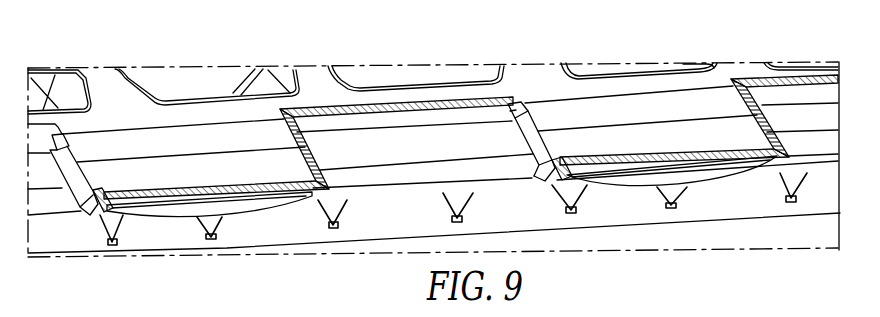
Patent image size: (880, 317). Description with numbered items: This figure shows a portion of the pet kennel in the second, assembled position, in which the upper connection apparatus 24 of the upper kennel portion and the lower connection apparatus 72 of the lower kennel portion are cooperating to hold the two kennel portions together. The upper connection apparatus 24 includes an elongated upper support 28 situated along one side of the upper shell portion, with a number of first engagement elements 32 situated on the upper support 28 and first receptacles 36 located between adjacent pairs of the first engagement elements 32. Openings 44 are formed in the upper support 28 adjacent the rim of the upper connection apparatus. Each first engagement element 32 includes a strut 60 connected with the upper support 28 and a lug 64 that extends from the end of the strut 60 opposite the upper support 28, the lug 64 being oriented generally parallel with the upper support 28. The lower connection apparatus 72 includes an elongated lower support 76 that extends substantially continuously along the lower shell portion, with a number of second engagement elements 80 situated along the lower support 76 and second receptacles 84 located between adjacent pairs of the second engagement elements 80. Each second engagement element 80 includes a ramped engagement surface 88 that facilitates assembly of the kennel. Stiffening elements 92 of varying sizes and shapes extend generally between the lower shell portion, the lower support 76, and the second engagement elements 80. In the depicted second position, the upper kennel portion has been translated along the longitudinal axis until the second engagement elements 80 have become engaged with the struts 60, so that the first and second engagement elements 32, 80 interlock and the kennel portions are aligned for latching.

The upper connection apparatus 24 is at (433, 115).
The upper support 28 is at (405, 109).
The first engagement element 32 is at (453, 227).
The first receptacle 36 is at (398, 172).
The opening 44 is at (58, 127).
The strut 60 is at (302, 142).
The lug 64 is at (278, 196).
The lower connection apparatus 72 is at (532, 172).
The lower support 76 is at (562, 97).
The second engagement element 80 is at (78, 193).
The second receptacle 84 is at (449, 174).
The bottom wall 88 is at (314, 158).
The stiffening element 92 is at (123, 222).